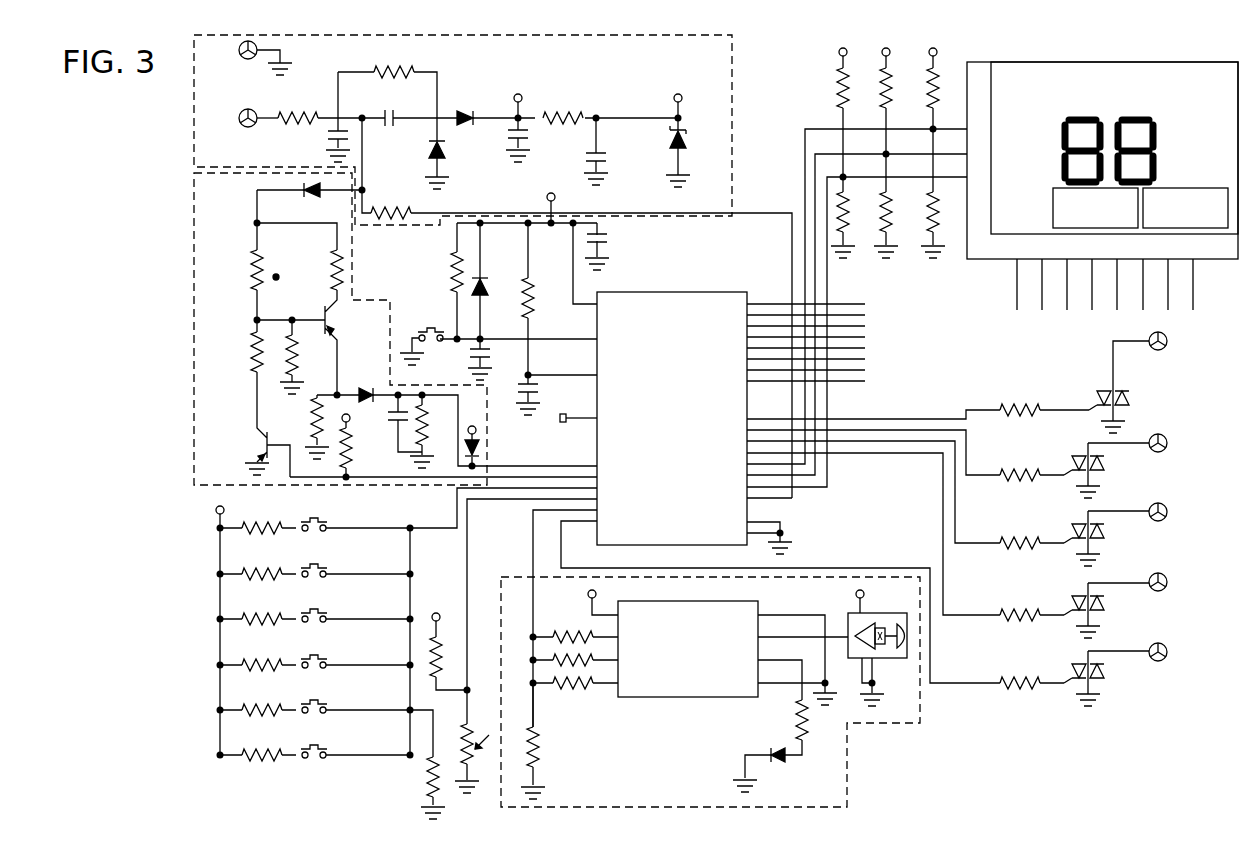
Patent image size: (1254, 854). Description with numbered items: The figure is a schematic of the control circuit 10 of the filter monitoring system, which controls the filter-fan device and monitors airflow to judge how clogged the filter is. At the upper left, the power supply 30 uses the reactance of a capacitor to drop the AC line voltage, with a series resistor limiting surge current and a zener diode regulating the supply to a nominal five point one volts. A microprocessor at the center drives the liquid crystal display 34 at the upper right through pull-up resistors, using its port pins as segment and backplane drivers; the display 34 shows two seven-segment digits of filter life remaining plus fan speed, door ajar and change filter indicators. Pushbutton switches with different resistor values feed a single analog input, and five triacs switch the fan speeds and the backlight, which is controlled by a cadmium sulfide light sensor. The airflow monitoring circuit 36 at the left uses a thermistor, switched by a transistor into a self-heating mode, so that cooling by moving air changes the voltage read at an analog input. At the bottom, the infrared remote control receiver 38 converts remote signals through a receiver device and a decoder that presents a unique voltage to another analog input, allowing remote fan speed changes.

The control circuit 10 is at (968, 761).
The power supply 30 is at (732, 55).
The liquid crystal display 34 is at (1170, 62).
The airflow monitoring circuit 36 is at (193, 478).
The infrared remote control receiver 38 is at (847, 752).